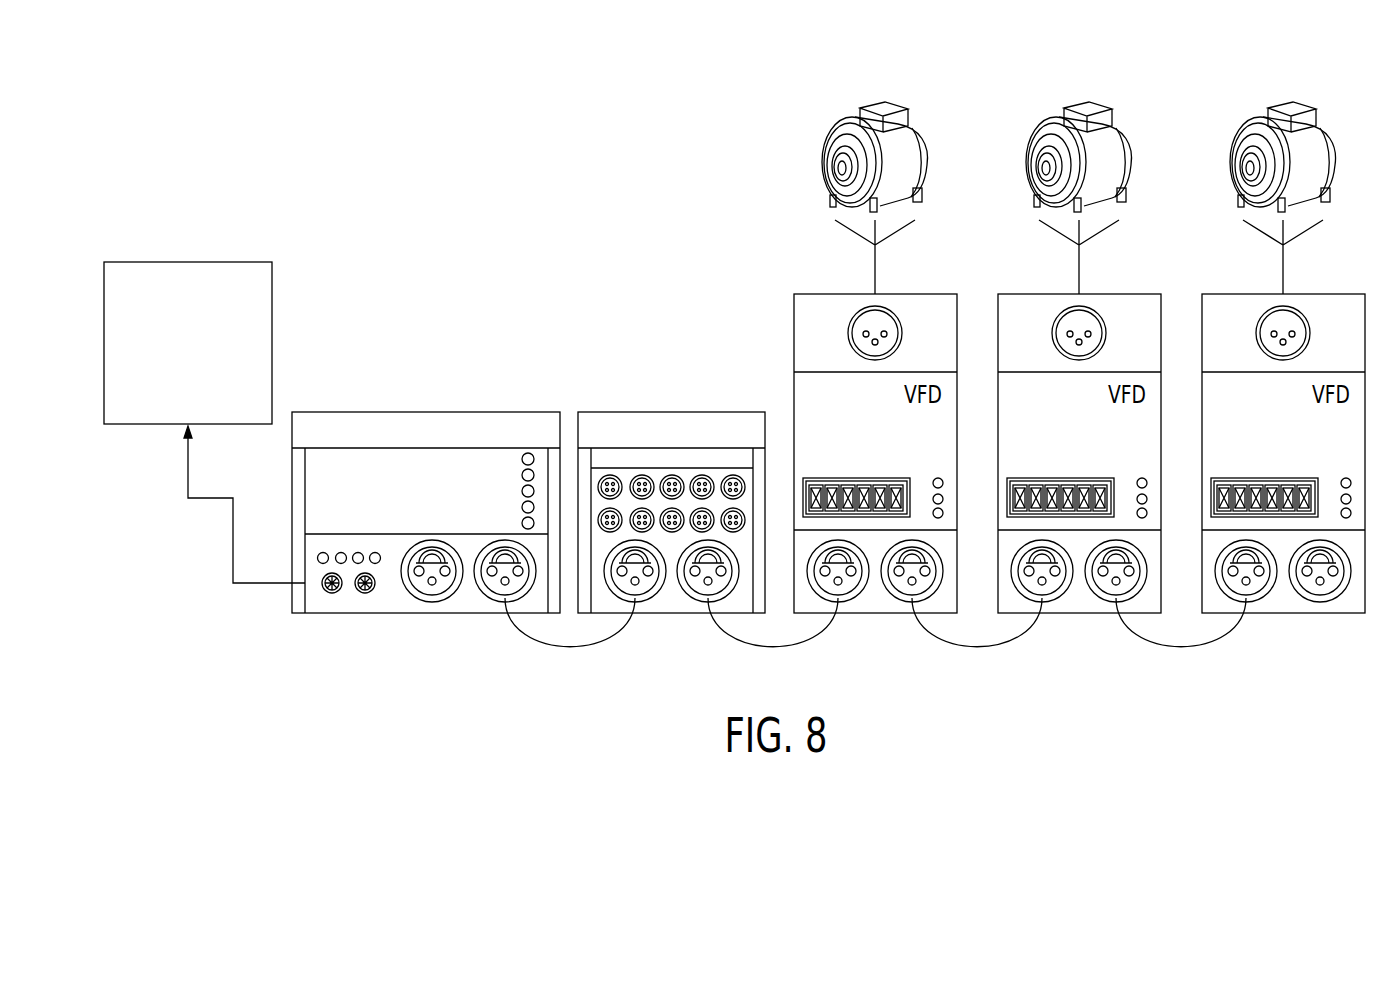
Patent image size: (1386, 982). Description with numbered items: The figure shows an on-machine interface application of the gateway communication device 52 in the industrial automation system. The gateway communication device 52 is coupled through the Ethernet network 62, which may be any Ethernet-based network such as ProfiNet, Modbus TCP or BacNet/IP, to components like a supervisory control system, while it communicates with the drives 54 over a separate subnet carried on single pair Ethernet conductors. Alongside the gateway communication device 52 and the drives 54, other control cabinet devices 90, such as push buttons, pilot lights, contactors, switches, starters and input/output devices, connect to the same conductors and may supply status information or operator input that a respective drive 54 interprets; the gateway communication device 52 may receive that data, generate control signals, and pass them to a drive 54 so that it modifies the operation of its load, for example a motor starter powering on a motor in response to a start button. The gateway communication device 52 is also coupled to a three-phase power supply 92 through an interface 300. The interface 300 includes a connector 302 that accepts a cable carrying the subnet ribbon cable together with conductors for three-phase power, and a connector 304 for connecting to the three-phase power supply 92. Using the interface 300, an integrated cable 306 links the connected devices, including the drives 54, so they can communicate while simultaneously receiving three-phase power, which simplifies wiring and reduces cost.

The Ethernet network 62 is at (200, 262).
The gateway communication device 52 is at (426, 541).
The control cabinet devices 90 is at (675, 412).
The three-phase power supply 92 is at (412, 596).
The interface 300 is at (499, 622).
The connector 302 is at (507, 564).
The connector 304 is at (483, 568).
The integrated cable 306 is at (570, 648).
The drives 54 is at (898, 102).